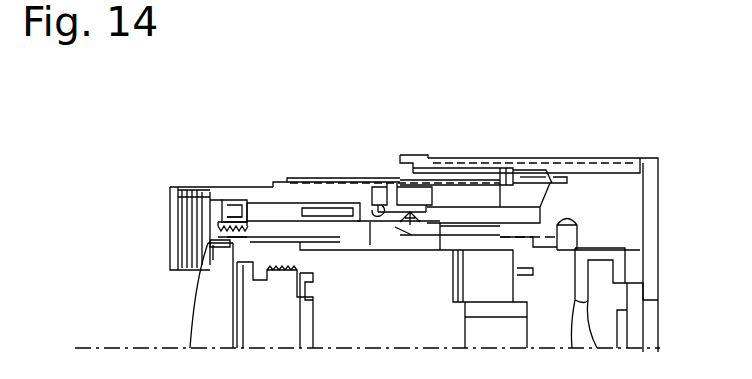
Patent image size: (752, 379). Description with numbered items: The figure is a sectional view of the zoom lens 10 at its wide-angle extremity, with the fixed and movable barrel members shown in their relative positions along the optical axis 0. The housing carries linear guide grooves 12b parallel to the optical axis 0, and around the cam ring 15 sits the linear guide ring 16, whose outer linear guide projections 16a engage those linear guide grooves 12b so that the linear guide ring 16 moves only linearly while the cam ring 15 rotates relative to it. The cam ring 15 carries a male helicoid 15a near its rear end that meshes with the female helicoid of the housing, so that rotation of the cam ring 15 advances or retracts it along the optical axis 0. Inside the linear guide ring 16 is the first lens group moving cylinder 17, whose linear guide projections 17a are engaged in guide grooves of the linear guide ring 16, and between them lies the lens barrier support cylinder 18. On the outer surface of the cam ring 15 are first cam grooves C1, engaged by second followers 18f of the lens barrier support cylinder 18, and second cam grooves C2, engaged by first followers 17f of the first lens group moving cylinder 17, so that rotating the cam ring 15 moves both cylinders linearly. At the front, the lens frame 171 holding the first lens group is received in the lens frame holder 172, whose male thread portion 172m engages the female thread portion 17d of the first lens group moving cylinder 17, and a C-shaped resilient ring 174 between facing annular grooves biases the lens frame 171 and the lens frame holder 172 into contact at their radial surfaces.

The optical axis 0 is at (90, 348).
The zoom lens 10 is at (250, 53).
The linear guide grooves 12b is at (585, 158).
The cam ring 15 is at (473, 158).
The male helicoid 15a is at (535, 162).
The linear guide ring 16 is at (317, 176).
The linear guide projections 16a is at (498, 158).
The first lens group moving cylinder 17 is at (262, 202).
The linear guide projections 17a is at (372, 178).
The female thread portion 17d is at (222, 228).
The male thread portion 172m is at (171, 212).
The lens frame holder 172 is at (230, 233).
The lens frame 171 is at (220, 241).
The C-shaped resilient ring 174 is at (218, 250).
The lens barrier support cylinder 18 is at (232, 197).
The first cam grooves C1 is at (372, 222).
The second followers 18f is at (357, 263).
The second cam grooves C2 is at (412, 235).
The first followers 17f is at (422, 265).